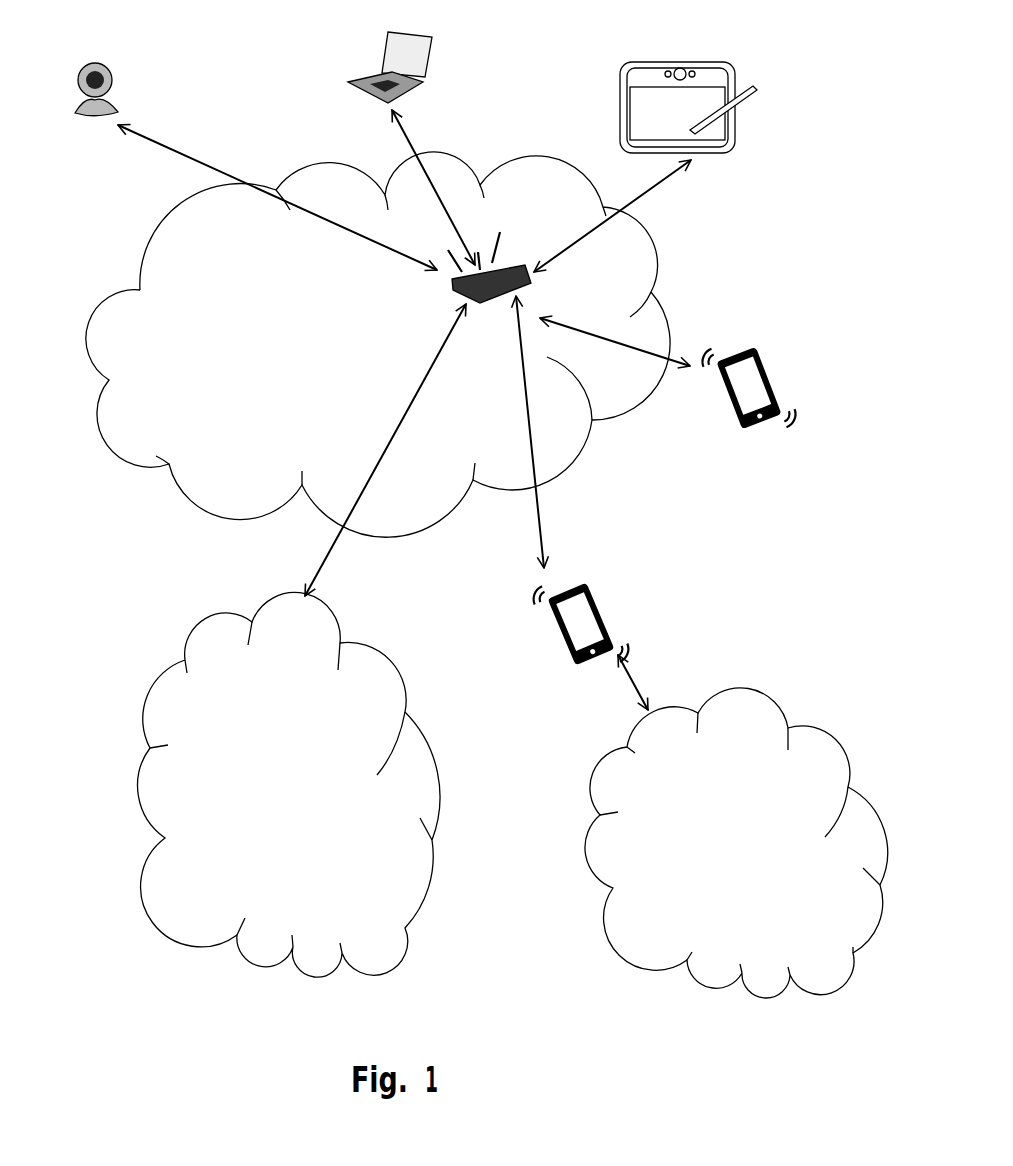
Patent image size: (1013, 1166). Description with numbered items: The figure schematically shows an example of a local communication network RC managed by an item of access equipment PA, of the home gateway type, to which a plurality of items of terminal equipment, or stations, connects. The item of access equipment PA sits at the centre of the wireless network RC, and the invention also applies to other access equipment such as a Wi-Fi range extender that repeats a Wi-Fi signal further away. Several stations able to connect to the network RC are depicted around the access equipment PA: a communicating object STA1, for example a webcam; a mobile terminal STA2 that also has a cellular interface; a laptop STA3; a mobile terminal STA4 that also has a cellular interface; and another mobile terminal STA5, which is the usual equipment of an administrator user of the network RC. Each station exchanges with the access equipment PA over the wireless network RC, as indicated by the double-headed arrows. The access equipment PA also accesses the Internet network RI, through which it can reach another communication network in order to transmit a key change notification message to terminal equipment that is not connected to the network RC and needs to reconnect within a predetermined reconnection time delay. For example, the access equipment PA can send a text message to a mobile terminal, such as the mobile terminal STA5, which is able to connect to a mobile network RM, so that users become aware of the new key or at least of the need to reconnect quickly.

The communicating object STA1 is at (115, 85).
The mobile terminal STA2 is at (422, 78).
The laptop STA3 is at (733, 88).
The mobile terminal STA4 is at (765, 370).
The mobile terminal STA5 is at (597, 592).
The item of access equipment PA is at (517, 253).
The local communication network RC is at (100, 432).
The Internet network RI is at (378, 648).
The mobile network RM is at (767, 692).